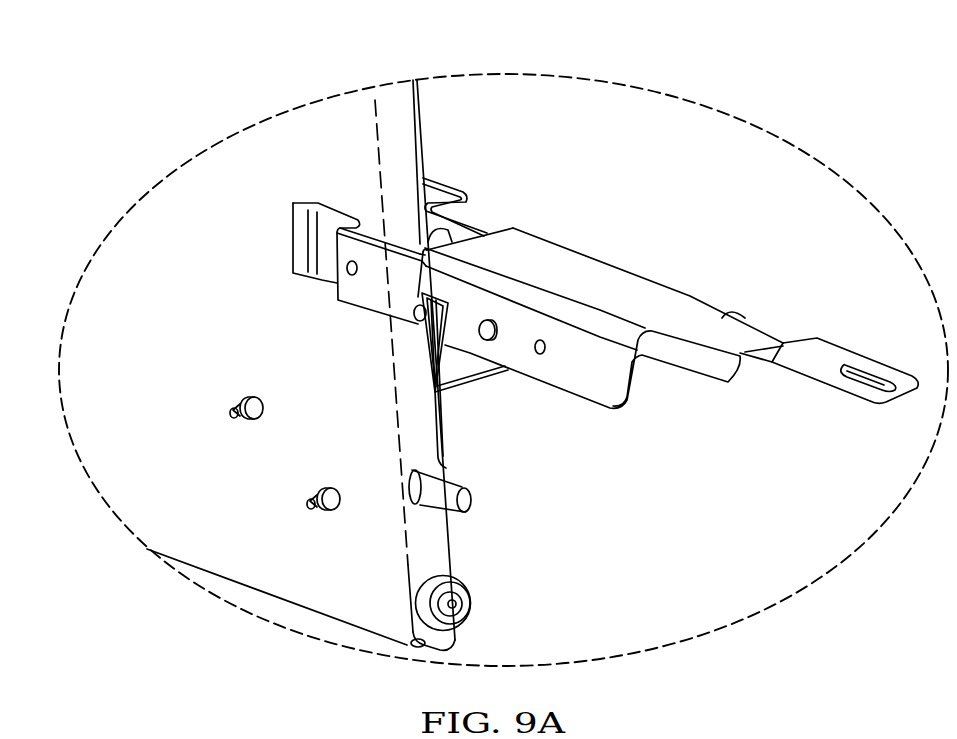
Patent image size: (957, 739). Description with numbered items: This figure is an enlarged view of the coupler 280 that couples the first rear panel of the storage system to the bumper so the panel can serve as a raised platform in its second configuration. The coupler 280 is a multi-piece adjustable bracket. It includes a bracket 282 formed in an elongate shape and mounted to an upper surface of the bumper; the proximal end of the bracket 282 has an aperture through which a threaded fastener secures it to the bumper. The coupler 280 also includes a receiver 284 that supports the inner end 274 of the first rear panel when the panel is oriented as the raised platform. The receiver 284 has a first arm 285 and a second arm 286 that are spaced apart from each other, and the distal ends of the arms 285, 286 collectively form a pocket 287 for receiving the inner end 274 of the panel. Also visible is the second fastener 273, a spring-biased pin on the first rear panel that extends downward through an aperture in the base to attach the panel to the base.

The second fastener 273 is at (471, 504).
The inner end 274 is at (425, 132).
The coupler 280 is at (626, 256).
The bracket 282 is at (831, 358).
The receiver 284 is at (487, 300).
The first arm 285 is at (441, 185).
The second arm 286 is at (372, 302).
The pocket 287 is at (396, 217).